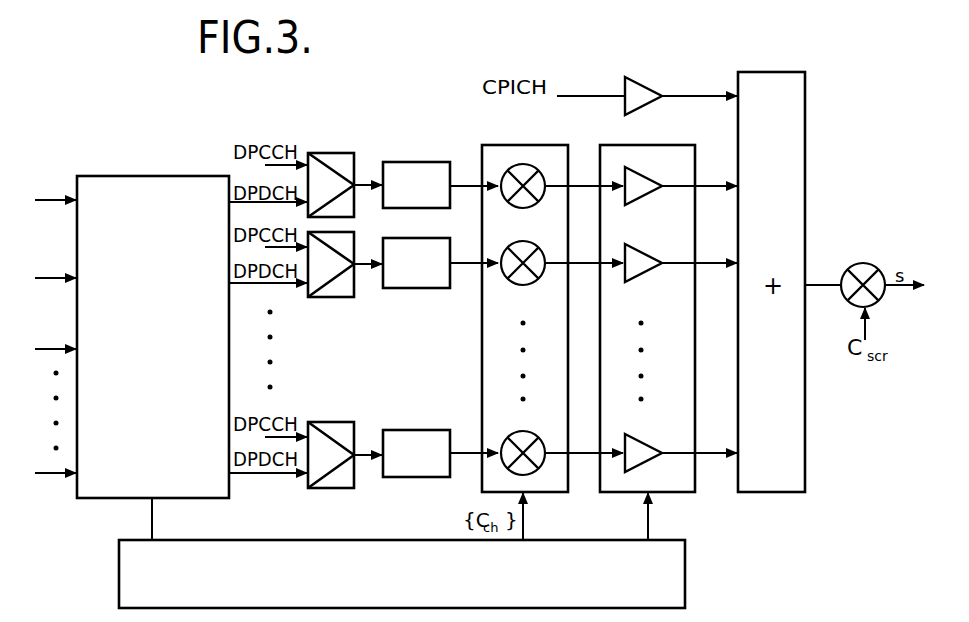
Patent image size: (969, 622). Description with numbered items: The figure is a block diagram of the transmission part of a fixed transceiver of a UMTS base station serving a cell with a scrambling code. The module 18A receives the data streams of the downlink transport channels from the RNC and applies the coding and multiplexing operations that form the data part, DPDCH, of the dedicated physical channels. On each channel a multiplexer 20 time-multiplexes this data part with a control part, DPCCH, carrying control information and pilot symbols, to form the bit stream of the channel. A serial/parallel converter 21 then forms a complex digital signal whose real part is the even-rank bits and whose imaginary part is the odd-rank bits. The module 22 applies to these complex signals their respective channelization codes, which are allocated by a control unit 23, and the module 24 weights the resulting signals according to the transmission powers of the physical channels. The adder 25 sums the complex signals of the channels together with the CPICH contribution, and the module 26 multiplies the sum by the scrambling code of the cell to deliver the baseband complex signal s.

The coding and multiplexing module 18A is at (126, 176).
The multiplexer 20 is at (337, 151).
The serial/parallel converter 21 is at (410, 162).
The channelization module 22 is at (482, 153).
The control unit 23 is at (685, 577).
The weighting module 24 is at (665, 493).
The adder 25 is at (772, 70).
The scrambling module 26 is at (857, 265).